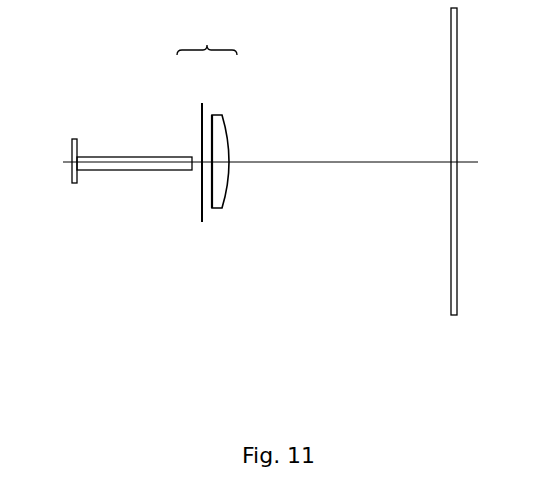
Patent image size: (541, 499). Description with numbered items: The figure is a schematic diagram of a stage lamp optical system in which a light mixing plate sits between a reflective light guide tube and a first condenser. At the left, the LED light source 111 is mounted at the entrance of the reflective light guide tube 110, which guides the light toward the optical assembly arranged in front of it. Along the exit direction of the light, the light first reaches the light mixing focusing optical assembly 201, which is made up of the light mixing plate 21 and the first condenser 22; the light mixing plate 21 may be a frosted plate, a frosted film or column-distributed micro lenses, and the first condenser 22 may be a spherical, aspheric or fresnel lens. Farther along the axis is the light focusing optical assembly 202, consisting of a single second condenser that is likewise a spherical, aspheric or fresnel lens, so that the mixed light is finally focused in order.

The LED light source 111 is at (74, 155).
The reflective light guide tube 110 is at (133, 160).
The light mixing focusing optical assembly 201 is at (207, 40).
The light mixing plate 21 is at (202, 103).
The first condenser 22 is at (218, 125).
The light focusing optical assembly 202 is at (456, 99).